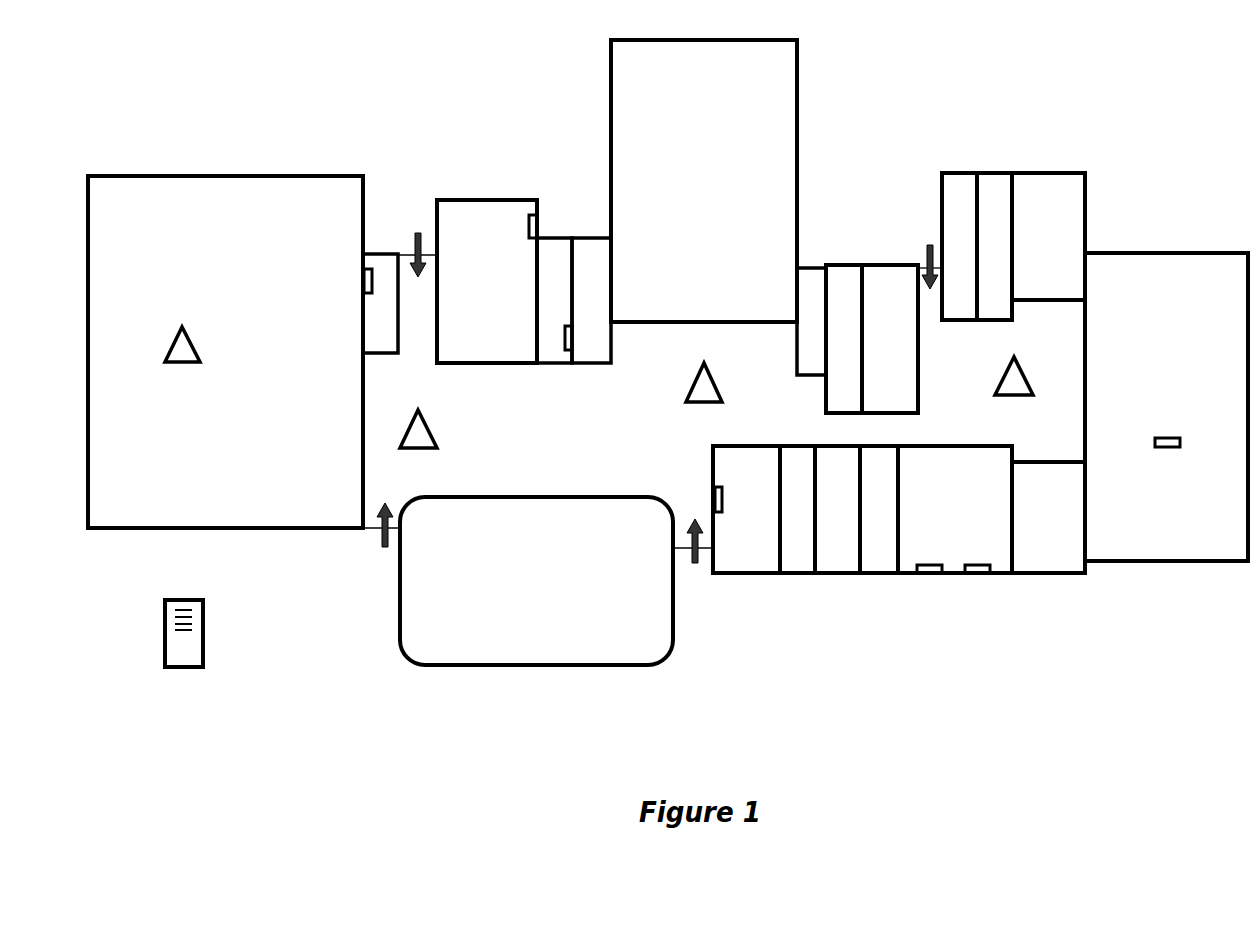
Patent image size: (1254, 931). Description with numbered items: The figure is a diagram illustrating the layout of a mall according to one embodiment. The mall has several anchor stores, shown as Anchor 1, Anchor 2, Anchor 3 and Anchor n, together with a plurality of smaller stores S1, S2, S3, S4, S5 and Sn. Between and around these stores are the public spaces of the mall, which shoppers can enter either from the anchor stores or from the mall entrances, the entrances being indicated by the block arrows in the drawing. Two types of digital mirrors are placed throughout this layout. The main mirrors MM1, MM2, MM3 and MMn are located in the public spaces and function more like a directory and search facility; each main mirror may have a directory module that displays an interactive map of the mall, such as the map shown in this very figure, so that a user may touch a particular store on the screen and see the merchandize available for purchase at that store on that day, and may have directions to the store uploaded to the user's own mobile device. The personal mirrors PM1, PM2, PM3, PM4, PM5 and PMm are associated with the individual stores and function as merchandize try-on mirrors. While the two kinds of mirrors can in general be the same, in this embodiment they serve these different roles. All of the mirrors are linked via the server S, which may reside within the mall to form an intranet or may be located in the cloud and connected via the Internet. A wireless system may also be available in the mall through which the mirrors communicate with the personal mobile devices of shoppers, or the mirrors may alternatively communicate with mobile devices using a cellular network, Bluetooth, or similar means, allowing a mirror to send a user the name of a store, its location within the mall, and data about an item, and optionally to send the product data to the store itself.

The anchor store Anchor 1 is at (225, 352).
The anchor store Anchor 2 is at (704, 181).
The anchor store Anchor 3 is at (1166, 407).
The anchor store Anchor n is at (536, 581).
The smaller store S1 is at (380, 303).
The smaller store S2 is at (487, 281).
The smaller store S3 is at (554, 300).
The smaller store S4 is at (591, 300).
The smaller store S5 is at (811, 321).
The smaller store Sn is at (1048, 517).
The personal mirror PM1 is at (922, 577).
The personal mirror PM2 is at (987, 577).
The personal mirror PM3 is at (1162, 451).
The personal mirror PM4 is at (533, 212).
The personal mirror PM5 is at (568, 352).
The personal mirror PMm is at (364, 272).
The main mirror MM1 is at (420, 417).
The main mirror MM2 is at (703, 381).
The main mirror MM3 is at (1006, 376).
The main mirror MMn is at (180, 338).
The server S is at (193, 600).